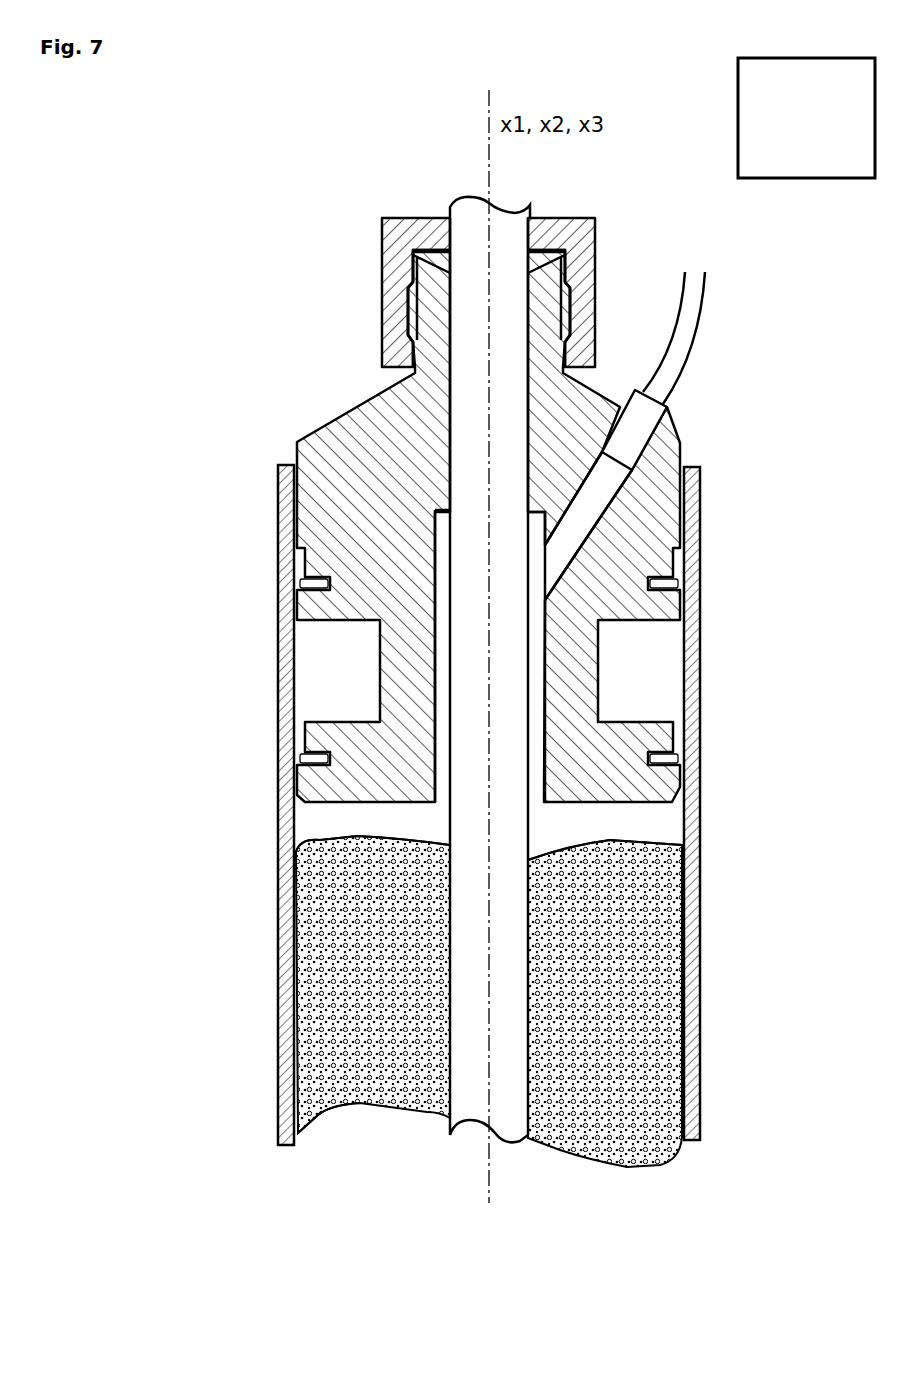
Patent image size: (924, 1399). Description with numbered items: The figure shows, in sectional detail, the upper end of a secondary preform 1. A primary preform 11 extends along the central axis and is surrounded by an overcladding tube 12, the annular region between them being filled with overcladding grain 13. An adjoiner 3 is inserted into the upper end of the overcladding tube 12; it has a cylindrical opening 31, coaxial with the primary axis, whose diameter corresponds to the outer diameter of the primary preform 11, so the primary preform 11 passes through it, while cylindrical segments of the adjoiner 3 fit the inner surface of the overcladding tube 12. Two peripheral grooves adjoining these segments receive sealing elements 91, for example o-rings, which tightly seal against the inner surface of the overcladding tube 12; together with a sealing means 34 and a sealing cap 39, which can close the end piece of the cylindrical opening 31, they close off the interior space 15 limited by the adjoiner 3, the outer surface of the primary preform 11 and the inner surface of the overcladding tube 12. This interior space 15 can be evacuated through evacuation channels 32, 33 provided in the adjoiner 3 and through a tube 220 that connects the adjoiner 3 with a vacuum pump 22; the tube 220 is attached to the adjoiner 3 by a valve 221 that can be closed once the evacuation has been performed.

The secondary preform 1 is at (520, 805).
The adjoiner 3 is at (342, 410).
The primary preform 11 is at (465, 972).
The overcladding tube 12 is at (278, 908).
The overcladding grain 13 is at (377, 1010).
The interior space 15 is at (373, 822).
The vacuum pump 22 is at (806, 118).
The cylindrical opening 31 is at (527, 287).
The evacuation channel 32 is at (537, 620).
The evacuation channel 33 is at (570, 533).
The sealing means 34 is at (698, 734).
The sealing cap 39 is at (408, 218).
The sealing element 91 is at (663, 582).
The tube 220 is at (678, 350).
The valve 221 is at (638, 423).